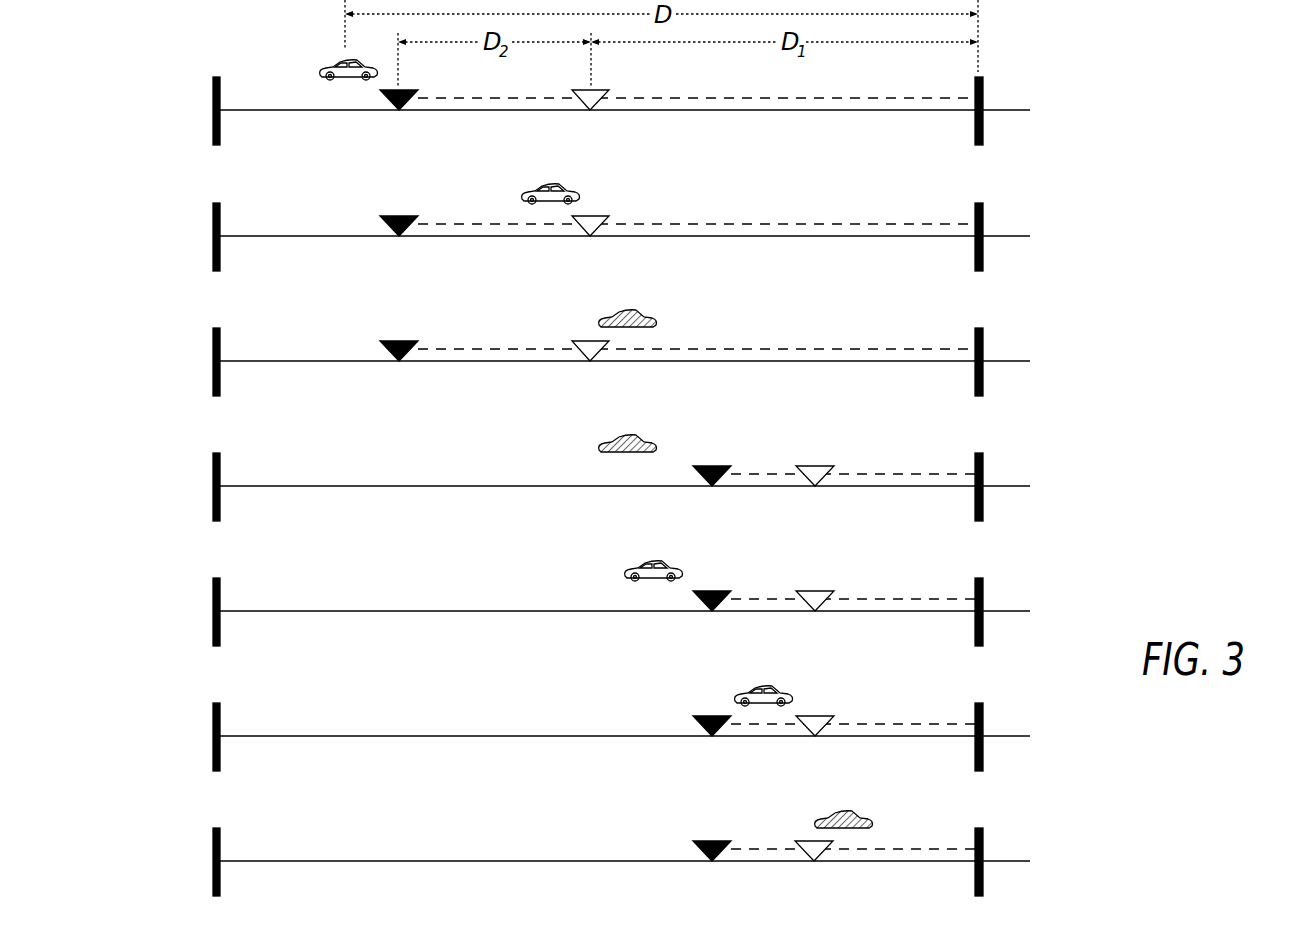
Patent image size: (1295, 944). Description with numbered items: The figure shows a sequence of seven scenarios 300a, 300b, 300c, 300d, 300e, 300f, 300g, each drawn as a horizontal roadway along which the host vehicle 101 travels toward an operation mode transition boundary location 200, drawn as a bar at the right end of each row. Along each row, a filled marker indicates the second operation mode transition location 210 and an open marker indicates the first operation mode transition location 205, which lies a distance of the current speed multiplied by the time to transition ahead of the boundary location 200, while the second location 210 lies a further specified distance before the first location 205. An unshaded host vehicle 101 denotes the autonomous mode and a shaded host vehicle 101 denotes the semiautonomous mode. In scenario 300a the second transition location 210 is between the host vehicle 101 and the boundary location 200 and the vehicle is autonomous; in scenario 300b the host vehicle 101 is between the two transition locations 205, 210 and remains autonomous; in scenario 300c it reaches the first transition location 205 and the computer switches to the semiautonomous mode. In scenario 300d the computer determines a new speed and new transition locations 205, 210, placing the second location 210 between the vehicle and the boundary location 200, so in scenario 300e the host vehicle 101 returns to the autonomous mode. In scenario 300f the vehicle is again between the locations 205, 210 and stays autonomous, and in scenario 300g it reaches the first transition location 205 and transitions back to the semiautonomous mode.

The host vehicle 101 is at (340, 58).
The operation mode transition boundary location 200 is at (983, 84).
The first operation mode transition location 205 is at (597, 89).
The second operation mode transition location 210 is at (405, 89).
The scenario 300a is at (251, 80).
The scenario 300b is at (251, 206).
The scenario 300c is at (251, 331).
The scenario 300d is at (251, 456).
The scenario 300e is at (251, 581).
The scenario 300f is at (251, 706).
The scenario 300g is at (251, 831).